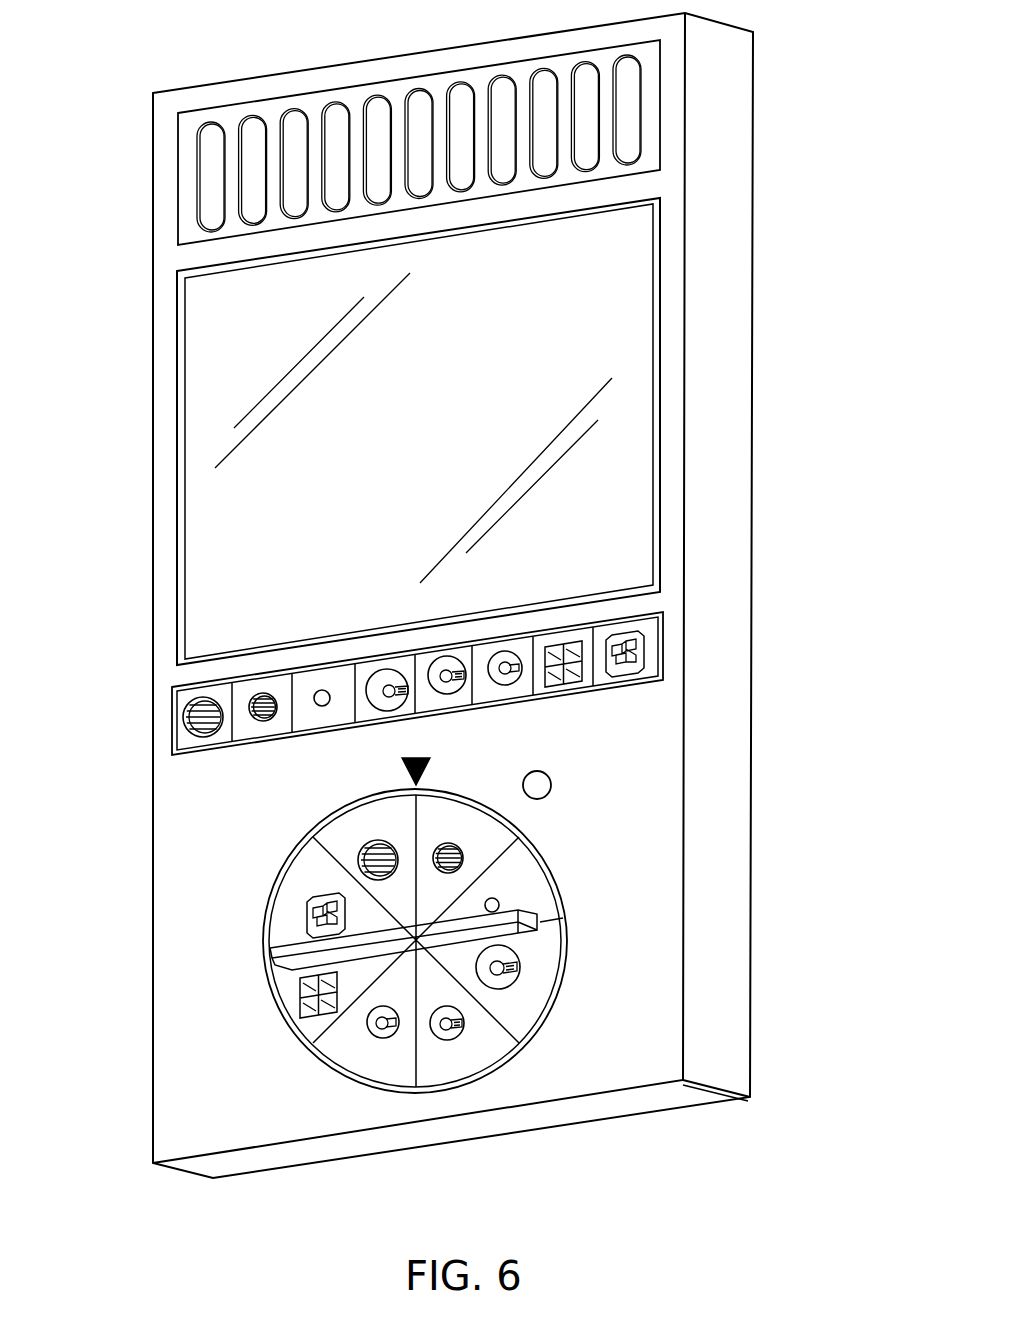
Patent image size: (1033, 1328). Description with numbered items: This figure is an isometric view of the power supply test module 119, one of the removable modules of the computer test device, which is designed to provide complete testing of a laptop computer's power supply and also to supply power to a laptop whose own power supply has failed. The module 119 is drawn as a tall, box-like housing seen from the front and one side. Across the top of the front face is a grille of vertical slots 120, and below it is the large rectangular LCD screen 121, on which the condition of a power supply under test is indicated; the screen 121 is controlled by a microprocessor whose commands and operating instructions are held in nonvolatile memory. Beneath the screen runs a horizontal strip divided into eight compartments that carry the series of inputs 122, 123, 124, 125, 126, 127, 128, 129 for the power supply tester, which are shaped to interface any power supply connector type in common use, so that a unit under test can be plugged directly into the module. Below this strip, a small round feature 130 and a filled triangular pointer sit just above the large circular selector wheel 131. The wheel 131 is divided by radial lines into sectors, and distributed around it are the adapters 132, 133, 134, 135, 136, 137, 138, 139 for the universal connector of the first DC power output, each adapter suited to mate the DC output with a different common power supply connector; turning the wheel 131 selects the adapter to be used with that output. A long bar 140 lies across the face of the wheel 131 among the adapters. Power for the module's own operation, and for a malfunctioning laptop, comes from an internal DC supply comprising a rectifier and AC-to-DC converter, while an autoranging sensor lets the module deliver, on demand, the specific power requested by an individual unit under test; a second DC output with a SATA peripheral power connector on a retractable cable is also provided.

The power supply test module 119 is at (200, 84).
The vent grille 120 is at (605, 155).
The LCD screen 121 is at (635, 395).
The power supply tester input 122 is at (192, 697).
The power supply tester input 123 is at (262, 692).
The power supply tester input 124 is at (320, 690).
The power supply tester input 125 is at (384, 669).
The power supply tester input 126 is at (450, 694).
The power supply tester input 127 is at (505, 685).
The power supply tester input 128 is at (565, 682).
The power supply tester input 129 is at (632, 672).
The indicator 130 is at (548, 796).
The selector wheel 131 is at (556, 975).
The adapter for first DC power output 132 is at (360, 850).
The adapter for first DC power output 133 is at (462, 857).
The adapter for first DC power output 134 is at (498, 903).
The adapter for first DC power output 135 is at (508, 988).
The adapter for first DC power output 136 is at (452, 1040).
The adapter for first DC power output 137 is at (378, 1040).
The adapter for first DC power output 138 is at (300, 998).
The adapter for first DC power output 139 is at (306, 905).
The slider bar 140 is at (270, 950).